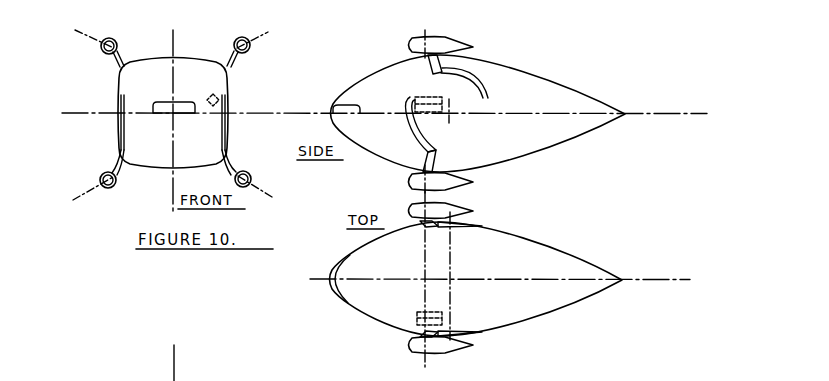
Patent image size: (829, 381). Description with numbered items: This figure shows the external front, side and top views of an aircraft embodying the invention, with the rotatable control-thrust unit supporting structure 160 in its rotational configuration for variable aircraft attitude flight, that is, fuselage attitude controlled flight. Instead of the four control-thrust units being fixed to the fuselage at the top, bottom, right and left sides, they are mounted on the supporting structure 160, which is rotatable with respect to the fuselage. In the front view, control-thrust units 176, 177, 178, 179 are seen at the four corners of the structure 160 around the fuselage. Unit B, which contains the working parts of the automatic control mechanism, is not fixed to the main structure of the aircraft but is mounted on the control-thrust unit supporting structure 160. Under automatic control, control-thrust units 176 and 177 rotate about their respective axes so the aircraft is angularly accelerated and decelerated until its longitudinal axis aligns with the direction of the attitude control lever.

The control-thrust unit supporting structure 160 is at (438, 68).
The control-thrust unit 176 is at (101, 47).
The control-thrust unit 177 is at (251, 181).
The propeller pod 178 is at (250, 45).
The propeller pod 179 is at (100, 177).
The unit B is at (425, 96).